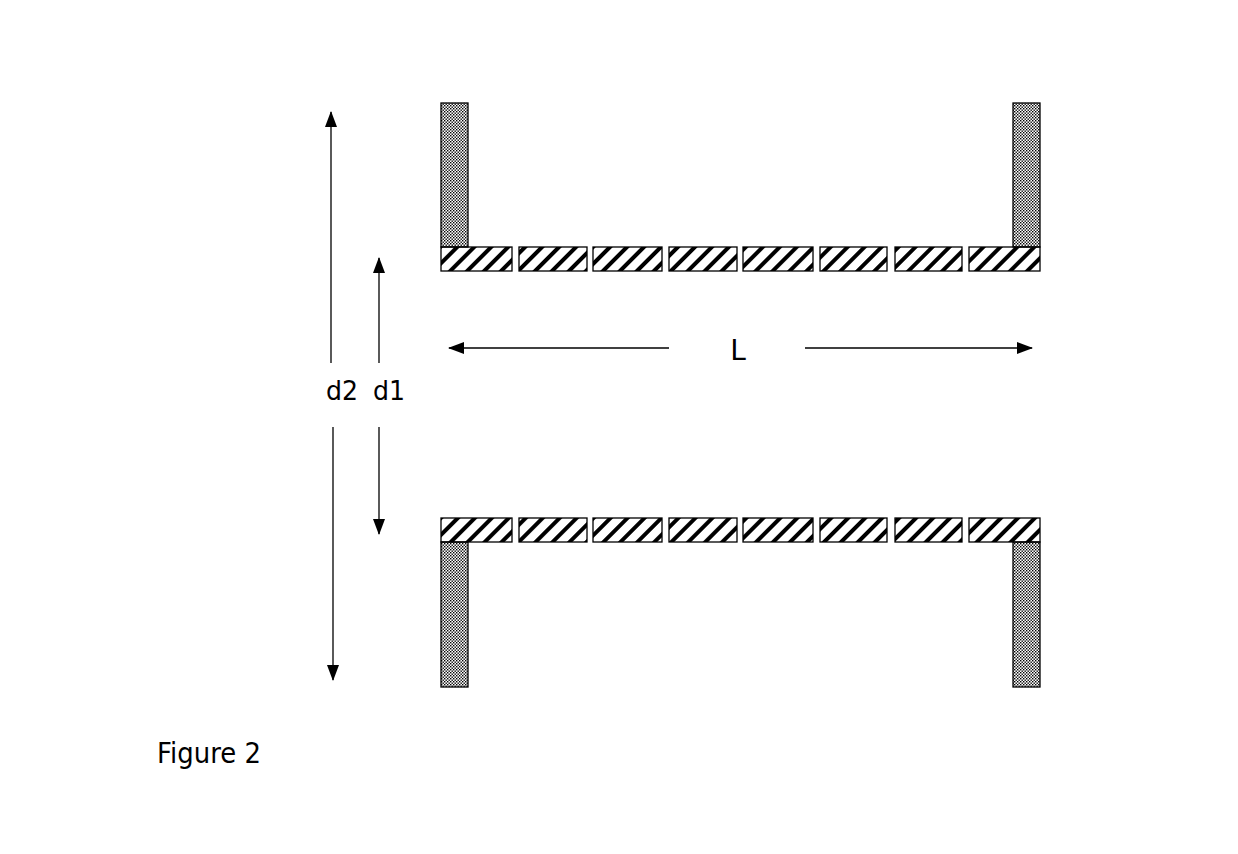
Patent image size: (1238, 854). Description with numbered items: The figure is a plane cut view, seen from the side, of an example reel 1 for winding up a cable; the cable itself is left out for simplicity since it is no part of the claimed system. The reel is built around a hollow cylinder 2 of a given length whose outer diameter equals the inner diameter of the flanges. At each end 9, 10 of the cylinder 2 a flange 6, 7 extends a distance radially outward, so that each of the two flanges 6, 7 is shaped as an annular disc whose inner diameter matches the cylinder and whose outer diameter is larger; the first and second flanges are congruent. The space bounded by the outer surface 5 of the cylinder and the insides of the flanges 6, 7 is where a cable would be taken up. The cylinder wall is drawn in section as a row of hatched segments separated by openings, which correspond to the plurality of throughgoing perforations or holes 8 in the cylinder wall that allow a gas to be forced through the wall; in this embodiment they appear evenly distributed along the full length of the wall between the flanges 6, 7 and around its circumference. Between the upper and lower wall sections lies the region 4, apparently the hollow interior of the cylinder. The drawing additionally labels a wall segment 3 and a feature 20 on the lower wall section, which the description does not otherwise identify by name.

The antenna device 1 is at (216, 180).
The cylinder 2 is at (1072, 267).
The conductive strip 3 is at (698, 518).
The gap between plates 4 is at (712, 406).
The outer surface 5 is at (840, 542).
The flange 6 is at (468, 175).
The flange 7 is at (1028, 151).
The conductive strips 8 is at (593, 242).
The end 9 is at (430, 306).
The end 10 is at (1056, 436).
The slot 20 is at (703, 542).